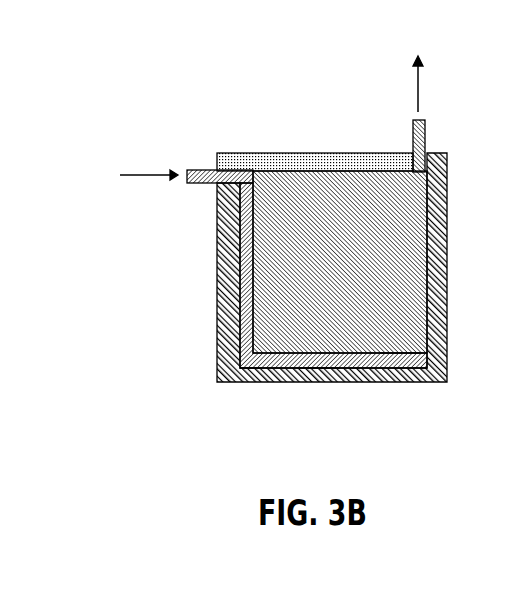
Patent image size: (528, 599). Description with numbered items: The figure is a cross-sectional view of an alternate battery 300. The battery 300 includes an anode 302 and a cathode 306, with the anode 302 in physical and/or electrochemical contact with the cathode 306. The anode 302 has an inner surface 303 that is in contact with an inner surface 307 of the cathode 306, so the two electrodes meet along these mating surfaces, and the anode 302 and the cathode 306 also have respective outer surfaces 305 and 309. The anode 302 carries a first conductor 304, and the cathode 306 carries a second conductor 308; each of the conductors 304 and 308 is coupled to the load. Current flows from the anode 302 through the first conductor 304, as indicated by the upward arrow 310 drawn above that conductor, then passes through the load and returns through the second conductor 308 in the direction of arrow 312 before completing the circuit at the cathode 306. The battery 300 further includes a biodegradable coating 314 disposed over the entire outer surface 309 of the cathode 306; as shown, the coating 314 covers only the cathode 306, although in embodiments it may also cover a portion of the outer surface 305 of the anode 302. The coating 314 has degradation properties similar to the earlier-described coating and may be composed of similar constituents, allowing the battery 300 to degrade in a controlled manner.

The battery 300 is at (150, 72).
The anode 302 is at (395, 225).
The inner surface 303 is at (396, 353).
The first conductor 304 is at (418, 140).
The outer surface 305 is at (342, 174).
The cathode 306 is at (320, 360).
The inner surface 307 is at (252, 322).
The second conductor 308 is at (200, 185).
The outer surface 309 is at (257, 370).
The outlet flow 310 is at (415, 92).
The arrow 312 is at (150, 175).
The biodegradable coating 314 is at (217, 348).